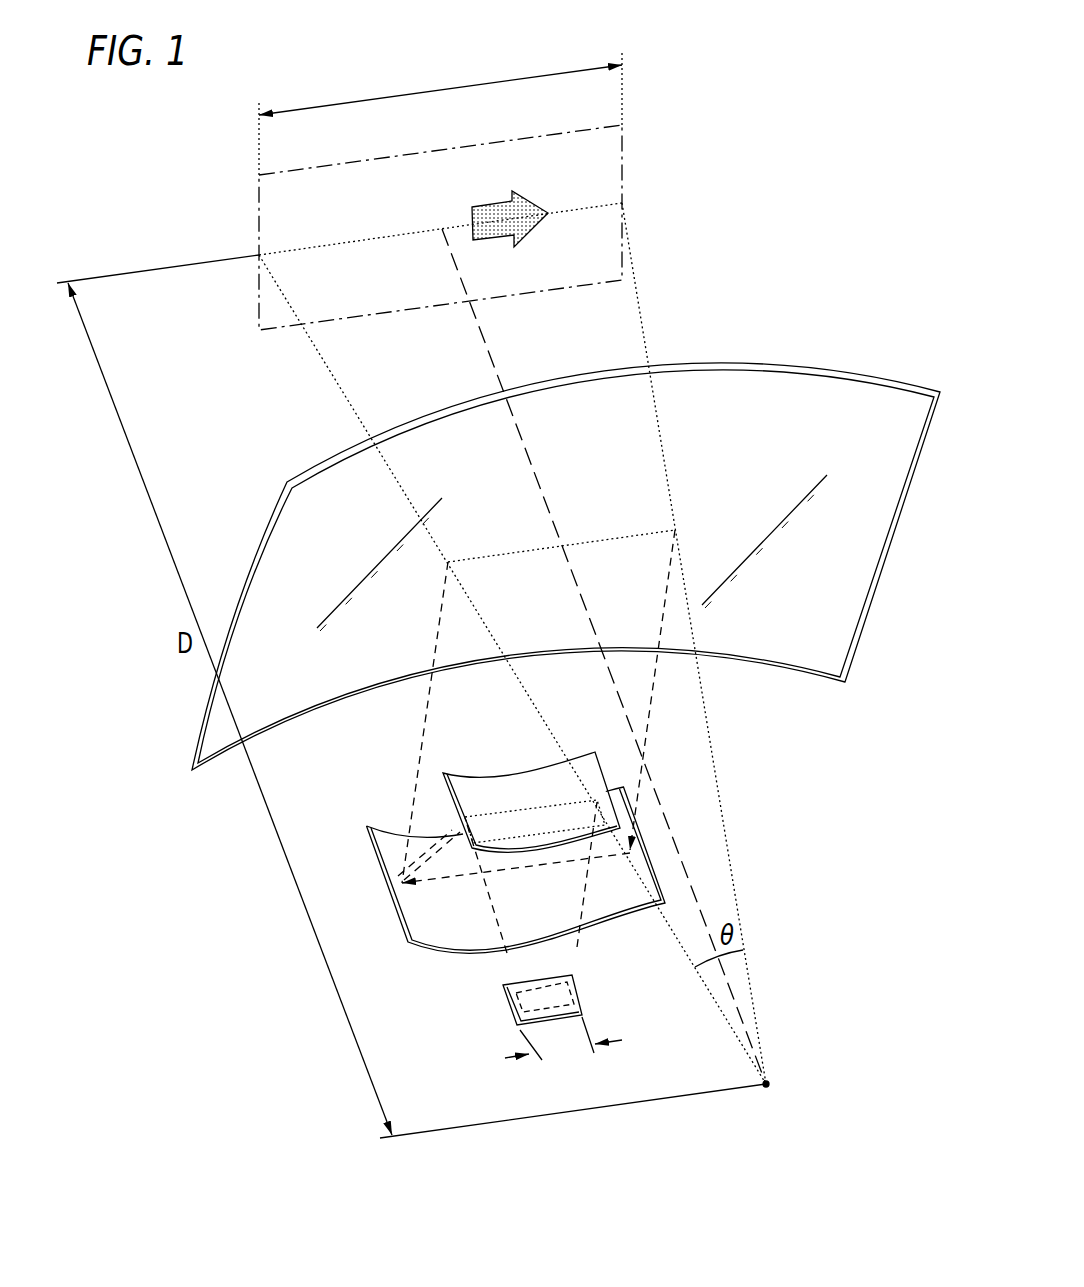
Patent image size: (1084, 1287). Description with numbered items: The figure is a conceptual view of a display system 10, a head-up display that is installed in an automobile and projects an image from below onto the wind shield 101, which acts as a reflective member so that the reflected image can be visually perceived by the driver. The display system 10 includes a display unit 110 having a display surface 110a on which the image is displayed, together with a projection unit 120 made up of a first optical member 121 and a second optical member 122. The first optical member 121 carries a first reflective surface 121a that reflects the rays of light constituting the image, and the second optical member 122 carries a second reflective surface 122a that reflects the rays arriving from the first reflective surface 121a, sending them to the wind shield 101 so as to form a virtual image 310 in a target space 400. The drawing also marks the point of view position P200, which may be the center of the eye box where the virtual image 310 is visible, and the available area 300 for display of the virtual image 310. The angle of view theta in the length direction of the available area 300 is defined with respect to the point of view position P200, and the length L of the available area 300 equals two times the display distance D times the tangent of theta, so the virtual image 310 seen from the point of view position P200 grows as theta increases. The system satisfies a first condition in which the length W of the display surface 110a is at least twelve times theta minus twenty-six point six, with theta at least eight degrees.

The display system 10 is at (283, 972).
The wind shield 101 is at (778, 380).
The display unit 110 is at (583, 1008).
The display surface 110a is at (568, 1002).
The projection unit 120 is at (340, 740).
The first optical member 121 is at (460, 788).
The first reflective surface 121a is at (508, 855).
The second optical member 122 is at (385, 835).
The second reflective surface 122a is at (446, 921).
The available area for display 300 is at (623, 183).
The virtual image 310 is at (525, 200).
The target space 400 is at (655, 113).
The point of view position P200 is at (773, 1090).